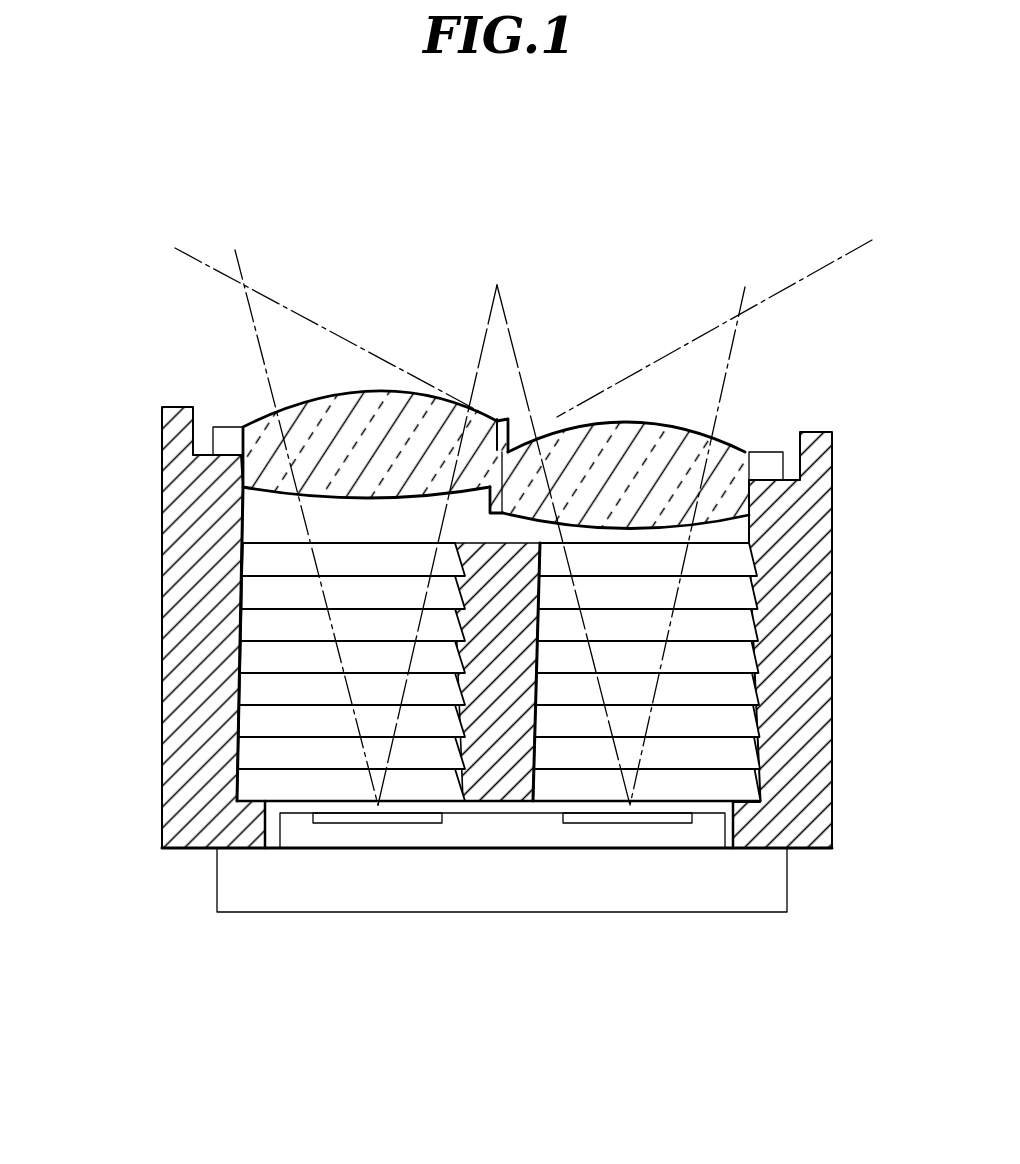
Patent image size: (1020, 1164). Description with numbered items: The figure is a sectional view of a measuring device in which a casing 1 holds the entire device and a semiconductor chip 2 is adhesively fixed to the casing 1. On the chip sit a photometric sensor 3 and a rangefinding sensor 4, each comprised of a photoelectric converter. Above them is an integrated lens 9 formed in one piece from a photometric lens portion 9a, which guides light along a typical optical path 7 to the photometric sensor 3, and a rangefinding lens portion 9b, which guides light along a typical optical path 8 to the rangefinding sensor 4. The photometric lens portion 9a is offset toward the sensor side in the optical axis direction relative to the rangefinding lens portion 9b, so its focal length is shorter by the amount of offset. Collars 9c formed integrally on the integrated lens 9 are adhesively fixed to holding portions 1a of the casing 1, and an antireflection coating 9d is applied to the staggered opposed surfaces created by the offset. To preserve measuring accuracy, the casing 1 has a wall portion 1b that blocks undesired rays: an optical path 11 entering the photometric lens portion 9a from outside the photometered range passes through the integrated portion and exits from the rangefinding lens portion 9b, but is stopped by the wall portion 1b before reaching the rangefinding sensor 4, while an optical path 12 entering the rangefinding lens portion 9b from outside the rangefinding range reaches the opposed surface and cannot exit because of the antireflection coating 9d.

The casing 1 is at (800, 745).
The holding portions 1a is at (230, 428).
The wall portion 1b is at (467, 716).
The semiconductor chip 2 is at (502, 880).
The photometric sensor 3 is at (653, 825).
The rangefinding sensor 4 is at (368, 825).
The optical path 7 is at (587, 628).
The optical path 8 is at (417, 632).
The integrated lens 9 is at (488, 366).
The photometric lens portion 9a is at (634, 424).
The rangefinding lens portion 9b is at (343, 390).
The collars 9c is at (230, 428).
The antireflection coating 9d is at (503, 445).
The optical path 11 is at (735, 322).
The optical path 12 is at (278, 300).